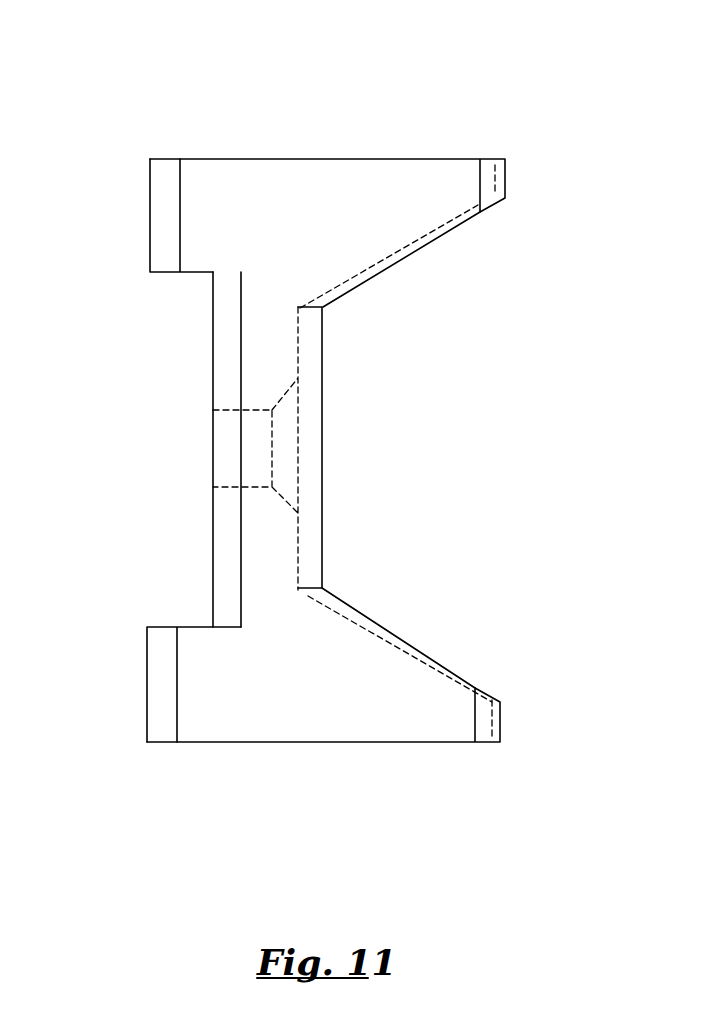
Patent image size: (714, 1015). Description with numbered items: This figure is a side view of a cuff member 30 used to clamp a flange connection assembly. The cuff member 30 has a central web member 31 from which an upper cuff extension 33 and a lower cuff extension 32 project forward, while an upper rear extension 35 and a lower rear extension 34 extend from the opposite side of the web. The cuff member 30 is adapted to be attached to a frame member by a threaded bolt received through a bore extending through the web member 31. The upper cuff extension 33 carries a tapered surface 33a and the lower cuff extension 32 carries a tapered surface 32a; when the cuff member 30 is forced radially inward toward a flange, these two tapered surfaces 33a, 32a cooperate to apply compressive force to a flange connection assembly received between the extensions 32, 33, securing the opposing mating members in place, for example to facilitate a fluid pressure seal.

The cuff member 30 is at (310, 158).
The web member 31 is at (237, 350).
The lower cuff extension 32 is at (413, 720).
The tapered surface 32a is at (413, 645).
The upper cuff extension 33 is at (443, 200).
The tapered surface 33a is at (398, 263).
The lower rear extension 34 is at (172, 637).
The upper rear extension 35 is at (188, 272).